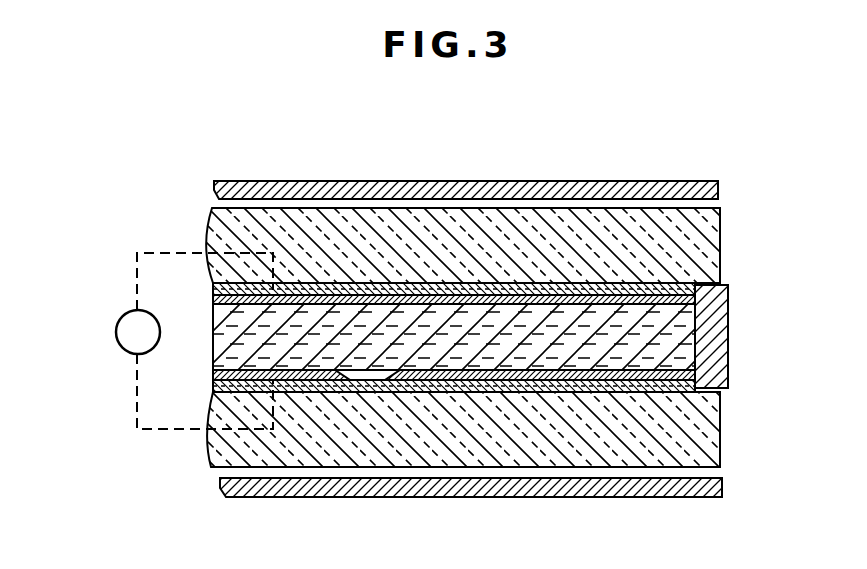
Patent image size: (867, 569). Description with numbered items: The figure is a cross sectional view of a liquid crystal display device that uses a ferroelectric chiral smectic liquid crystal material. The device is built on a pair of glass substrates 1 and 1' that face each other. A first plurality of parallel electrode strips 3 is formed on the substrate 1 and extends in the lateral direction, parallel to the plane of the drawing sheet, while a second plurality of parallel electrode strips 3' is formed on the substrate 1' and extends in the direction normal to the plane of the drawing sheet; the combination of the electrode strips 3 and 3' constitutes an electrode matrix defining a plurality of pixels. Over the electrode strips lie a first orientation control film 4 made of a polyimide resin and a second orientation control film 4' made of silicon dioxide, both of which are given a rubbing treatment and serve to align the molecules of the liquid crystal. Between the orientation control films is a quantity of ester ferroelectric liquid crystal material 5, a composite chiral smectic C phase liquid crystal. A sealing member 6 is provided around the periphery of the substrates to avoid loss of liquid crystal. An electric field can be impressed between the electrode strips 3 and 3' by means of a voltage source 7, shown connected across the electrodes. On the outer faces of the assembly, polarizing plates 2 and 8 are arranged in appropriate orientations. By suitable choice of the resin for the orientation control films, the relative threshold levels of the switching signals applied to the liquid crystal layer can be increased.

The glass substrate 1 is at (495, 221).
The glass substrate 1' is at (500, 429).
The polarizing plate 2 is at (703, 183).
The first plurality of parallel electrode strips 3 is at (498, 249).
The second plurality of parallel electrode strips 3' is at (503, 400).
The first orientation control film 4 is at (498, 285).
The second orientation control film 4' is at (503, 359).
The ester ferroelectric liquid crystal material 5 is at (454, 337).
The sealing member 6 is at (729, 312).
The voltage source 7 is at (122, 322).
The polarizing plate 8 is at (697, 494).